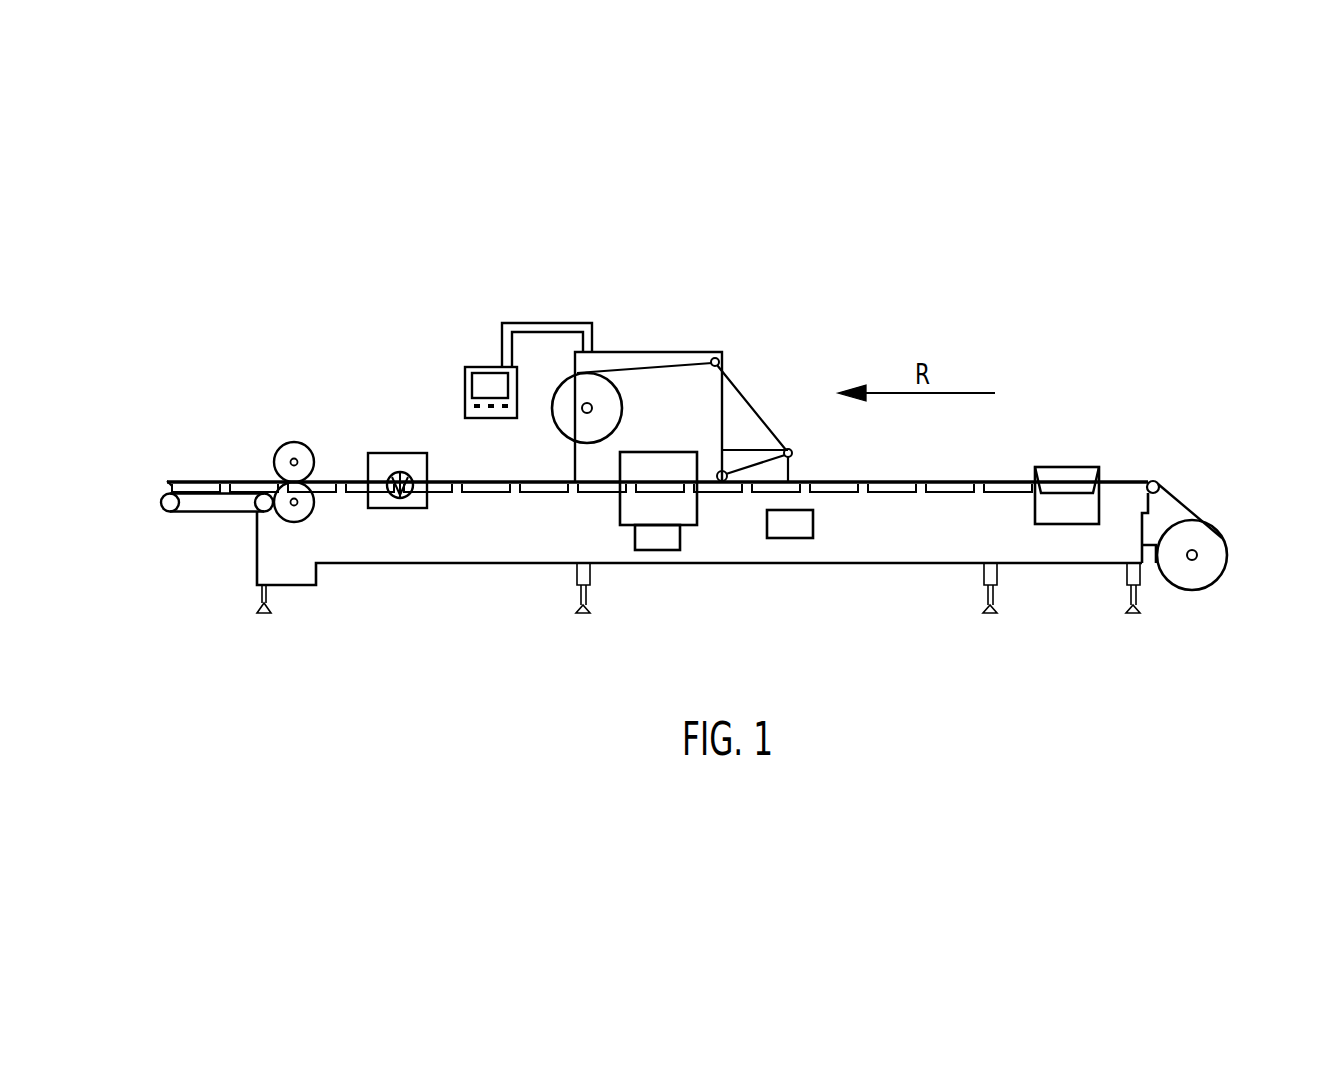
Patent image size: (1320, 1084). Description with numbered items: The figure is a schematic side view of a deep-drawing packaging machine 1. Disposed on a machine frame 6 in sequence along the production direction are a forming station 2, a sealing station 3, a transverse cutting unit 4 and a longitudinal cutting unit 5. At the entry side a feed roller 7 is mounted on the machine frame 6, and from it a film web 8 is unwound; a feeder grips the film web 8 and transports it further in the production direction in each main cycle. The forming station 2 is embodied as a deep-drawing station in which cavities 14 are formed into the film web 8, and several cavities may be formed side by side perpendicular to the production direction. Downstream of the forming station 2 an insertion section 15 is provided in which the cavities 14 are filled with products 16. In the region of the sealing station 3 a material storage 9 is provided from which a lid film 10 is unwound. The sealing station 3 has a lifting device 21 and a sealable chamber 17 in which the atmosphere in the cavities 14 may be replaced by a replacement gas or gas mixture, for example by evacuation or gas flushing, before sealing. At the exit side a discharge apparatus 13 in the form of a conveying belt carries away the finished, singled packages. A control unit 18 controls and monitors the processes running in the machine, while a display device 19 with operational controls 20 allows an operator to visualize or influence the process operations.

The deep-drawing packaging machine 1 is at (935, 280).
The forming station 2 is at (1072, 472).
The sealing station 3 is at (643, 463).
The transverse cutting unit 4 is at (385, 458).
The longitudinal cutting unit 5 is at (294, 443).
The machine frame 6 is at (568, 569).
The feed roller 7 is at (1203, 530).
The film web 8 is at (1180, 490).
The material storage 9 is at (568, 428).
The lid film 10 is at (685, 358).
The discharge apparatus 13 is at (205, 513).
The cavities 14 is at (1062, 497).
The insertion section 15 is at (862, 494).
The products 16 is at (910, 480).
The sealable chamber 17 is at (655, 517).
The control unit 18 is at (790, 528).
The display device 19 is at (485, 364).
The operational controls 20 is at (466, 405).
The lifting device 21 is at (678, 538).